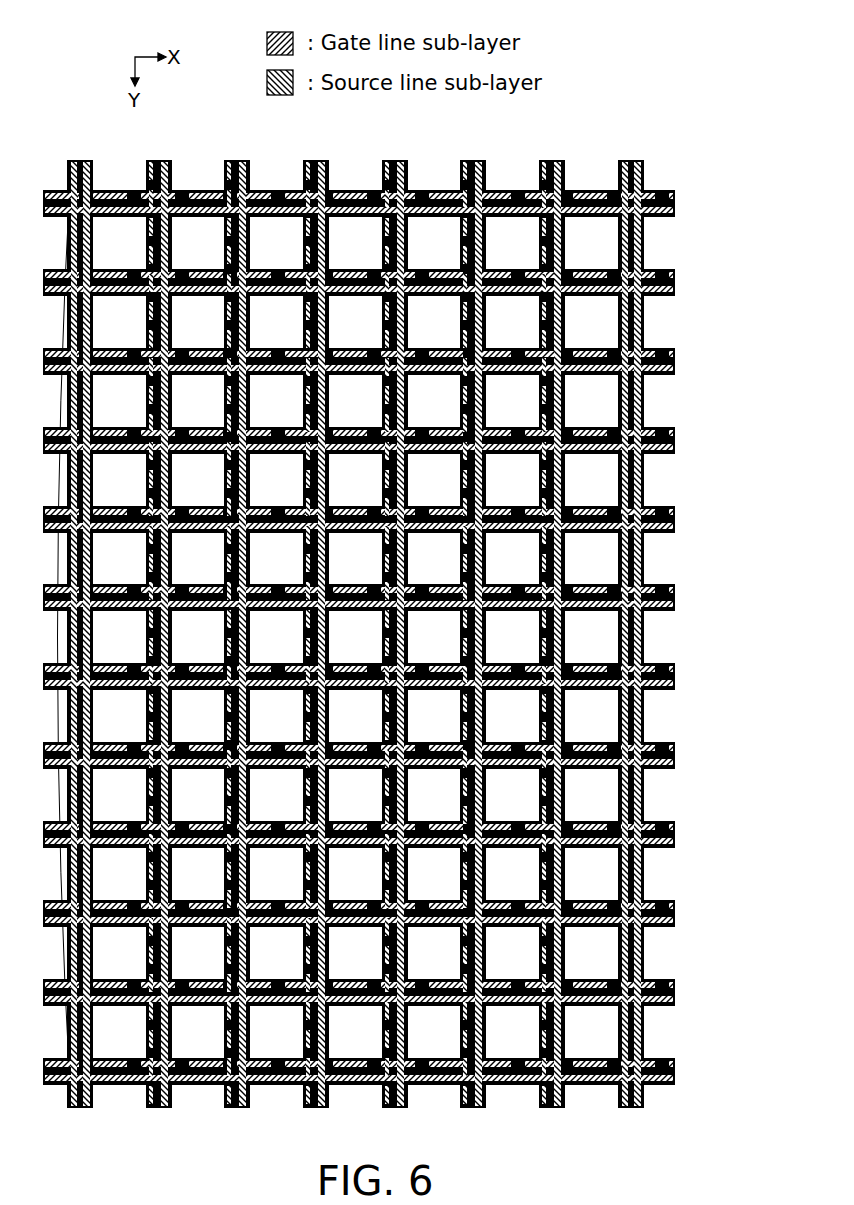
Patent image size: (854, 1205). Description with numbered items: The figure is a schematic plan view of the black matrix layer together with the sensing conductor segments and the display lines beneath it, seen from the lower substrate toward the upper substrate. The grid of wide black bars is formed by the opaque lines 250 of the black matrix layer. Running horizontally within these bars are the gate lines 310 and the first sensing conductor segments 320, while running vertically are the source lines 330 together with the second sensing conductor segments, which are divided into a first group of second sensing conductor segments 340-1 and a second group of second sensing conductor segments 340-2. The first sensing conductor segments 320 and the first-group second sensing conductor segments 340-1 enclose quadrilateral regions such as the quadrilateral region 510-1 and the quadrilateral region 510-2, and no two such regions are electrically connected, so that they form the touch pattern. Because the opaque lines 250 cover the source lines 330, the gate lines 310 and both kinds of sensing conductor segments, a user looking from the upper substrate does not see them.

The opaque lines 250 is at (158, 161).
The gate lines 310 is at (675, 211).
The first sensing conductor segments 320 is at (663, 196).
The source lines 330 is at (560, 161).
The second sensing conductor segments of the first group 340-1 is at (545, 161).
The second sensing conductor segments of the second group 340-2 is at (73, 160).
The quadrilateral region 510-1 is at (568, 718).
The quadrilateral region 510-2 is at (568, 497).